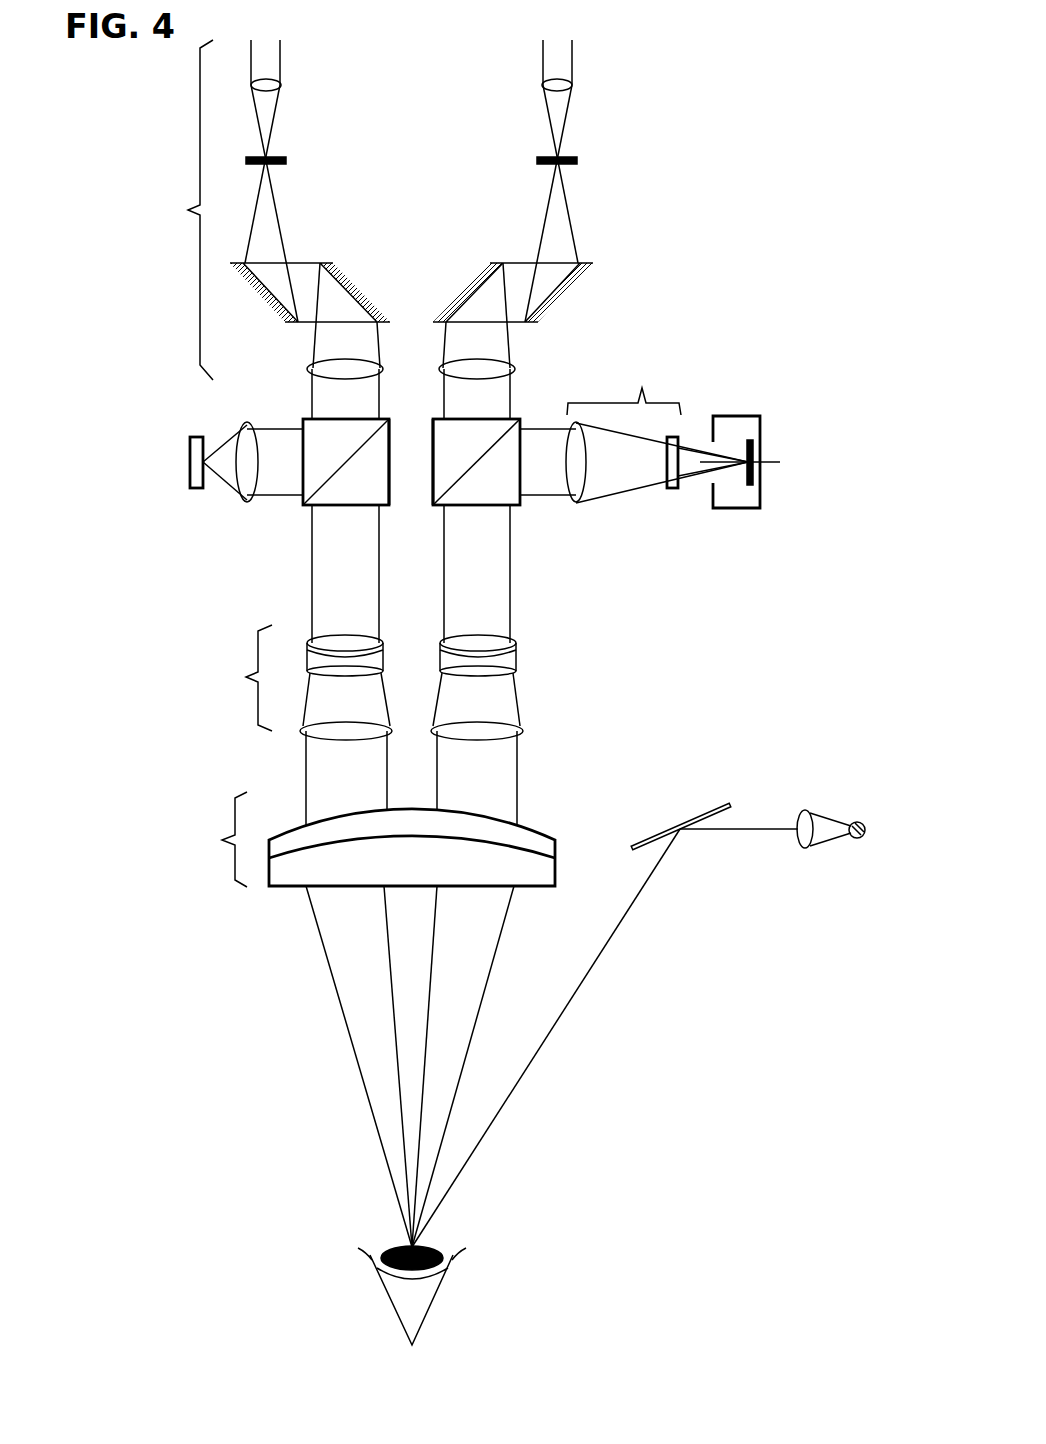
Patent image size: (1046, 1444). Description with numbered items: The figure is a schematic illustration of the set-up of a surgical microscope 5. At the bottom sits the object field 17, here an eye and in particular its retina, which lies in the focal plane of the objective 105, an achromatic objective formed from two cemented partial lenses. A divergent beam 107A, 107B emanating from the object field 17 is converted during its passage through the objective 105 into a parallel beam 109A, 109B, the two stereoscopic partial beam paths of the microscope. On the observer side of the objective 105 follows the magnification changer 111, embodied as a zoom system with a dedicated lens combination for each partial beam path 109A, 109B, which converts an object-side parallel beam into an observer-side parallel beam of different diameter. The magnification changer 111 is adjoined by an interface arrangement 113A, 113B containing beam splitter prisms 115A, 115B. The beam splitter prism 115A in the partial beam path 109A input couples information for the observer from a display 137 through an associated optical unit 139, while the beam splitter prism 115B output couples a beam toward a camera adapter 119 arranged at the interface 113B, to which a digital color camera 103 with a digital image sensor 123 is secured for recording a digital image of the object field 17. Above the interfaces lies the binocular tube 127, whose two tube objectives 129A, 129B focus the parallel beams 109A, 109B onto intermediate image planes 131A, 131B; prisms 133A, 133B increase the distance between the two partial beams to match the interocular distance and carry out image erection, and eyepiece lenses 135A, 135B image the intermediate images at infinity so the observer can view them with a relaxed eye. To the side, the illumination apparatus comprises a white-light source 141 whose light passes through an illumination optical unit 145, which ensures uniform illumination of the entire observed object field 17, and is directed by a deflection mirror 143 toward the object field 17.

The surgical microscope 5 is at (676, 265).
The object field 17 is at (432, 1248).
The digital color camera 103 is at (732, 416).
The objective 105 is at (365, 839).
The divergent beam 107A is at (342, 1012).
The divergent beam 107B is at (493, 964).
The parallel beam 109A is at (305, 766).
The parallel beam 109B is at (518, 775).
The magnification changer 111 is at (361, 678).
The interface 113A is at (337, 496).
The interface 113B is at (487, 496).
The beam splitter prism 115A is at (391, 484).
The beam splitter prism 115B is at (428, 456).
The camera adapter 119 is at (657, 430).
The digital image sensor 123 is at (758, 450).
The binocular tube 127 is at (177, 210).
The tube objective 129A is at (308, 368).
The tube objective 129B is at (513, 368).
The intermediate image plane 131A is at (288, 160).
The intermediate image plane 131B is at (578, 159).
The prism 133A is at (310, 251).
The prism 133B is at (512, 251).
The eyepiece lens 135A is at (283, 85).
The eyepiece lens 135B is at (573, 84).
The display 137 is at (190, 462).
The optical unit 139 is at (245, 424).
The white-light source 141 is at (866, 825).
The deflection mirror 143 is at (696, 808).
The illumination optical unit 145 is at (803, 811).